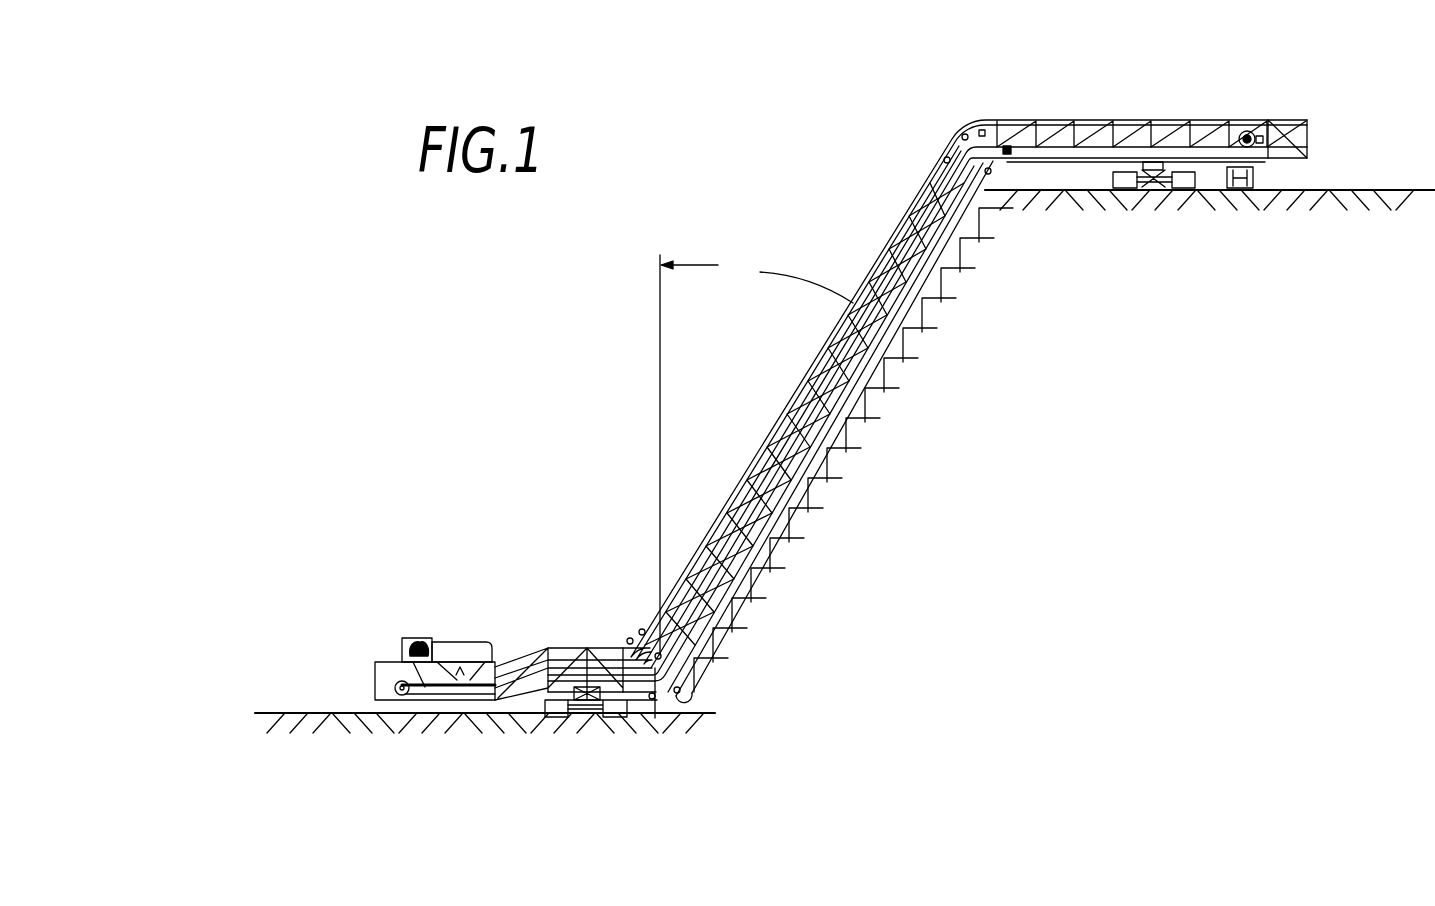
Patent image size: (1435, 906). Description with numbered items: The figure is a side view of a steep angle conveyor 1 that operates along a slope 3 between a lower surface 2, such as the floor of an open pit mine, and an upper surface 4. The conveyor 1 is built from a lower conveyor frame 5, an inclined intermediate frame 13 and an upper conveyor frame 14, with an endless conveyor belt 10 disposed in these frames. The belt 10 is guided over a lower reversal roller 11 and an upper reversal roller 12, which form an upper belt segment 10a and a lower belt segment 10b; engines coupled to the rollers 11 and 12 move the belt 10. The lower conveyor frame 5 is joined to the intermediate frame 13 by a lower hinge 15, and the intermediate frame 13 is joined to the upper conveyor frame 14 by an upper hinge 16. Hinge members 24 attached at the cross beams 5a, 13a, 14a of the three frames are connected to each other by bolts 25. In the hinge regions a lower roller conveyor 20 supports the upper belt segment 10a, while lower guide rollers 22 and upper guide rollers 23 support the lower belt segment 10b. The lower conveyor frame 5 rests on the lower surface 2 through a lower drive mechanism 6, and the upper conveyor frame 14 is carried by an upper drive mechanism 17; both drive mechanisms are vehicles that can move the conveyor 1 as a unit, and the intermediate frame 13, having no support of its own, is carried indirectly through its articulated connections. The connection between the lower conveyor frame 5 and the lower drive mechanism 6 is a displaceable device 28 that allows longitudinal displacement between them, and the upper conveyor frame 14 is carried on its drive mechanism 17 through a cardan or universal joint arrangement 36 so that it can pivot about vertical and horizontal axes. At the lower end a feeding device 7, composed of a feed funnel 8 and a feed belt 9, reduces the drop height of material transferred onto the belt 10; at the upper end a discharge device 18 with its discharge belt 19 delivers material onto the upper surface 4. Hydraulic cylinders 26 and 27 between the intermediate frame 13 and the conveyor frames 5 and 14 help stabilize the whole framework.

The steep angle conveyor 1 is at (788, 360).
The lower surface 2 is at (293, 712).
The slope 3 is at (873, 400).
The upper surface 4 is at (1433, 190).
The lower conveyor frame 5 is at (548, 640).
The cross beam 5a is at (636, 703).
The lower drive mechanism 6 is at (553, 718).
The feeding device 7 is at (425, 692).
The feed funnel 8 is at (457, 642).
The feed belt 9 is at (460, 695).
The endless conveyor belt 10 is at (927, 408).
The upper belt segment 10a is at (880, 255).
The lower belt segment 10b is at (920, 275).
The lower reversal roller 11 is at (400, 695).
The upper reversal roller 12 is at (1247, 131).
The intermediate frame 13 is at (790, 400).
The cross beam 13a is at (740, 598).
The upper conveyor frame 14 is at (1154, 104).
The cross beam 14a is at (1091, 162).
The lower hinge 15 is at (670, 714).
The upper hinge 16 is at (995, 181).
The upper drive mechanism 17 is at (1187, 188).
The discharge device 18 is at (1257, 144).
The discharge belt 19 is at (1250, 188).
The lower roller conveyor 20 is at (641, 630).
The lower guide rollers 22 is at (661, 657).
The upper guide rollers 23 is at (1009, 156).
The hinge members 24 is at (652, 699).
The bolts 25 is at (679, 693).
The hydraulic cylinder 26 is at (983, 130).
The hydraulic cylinder 27 is at (628, 639).
The displaceable device 28 is at (587, 703).
The cardan or universal joint arrangement 36 is at (1152, 187).